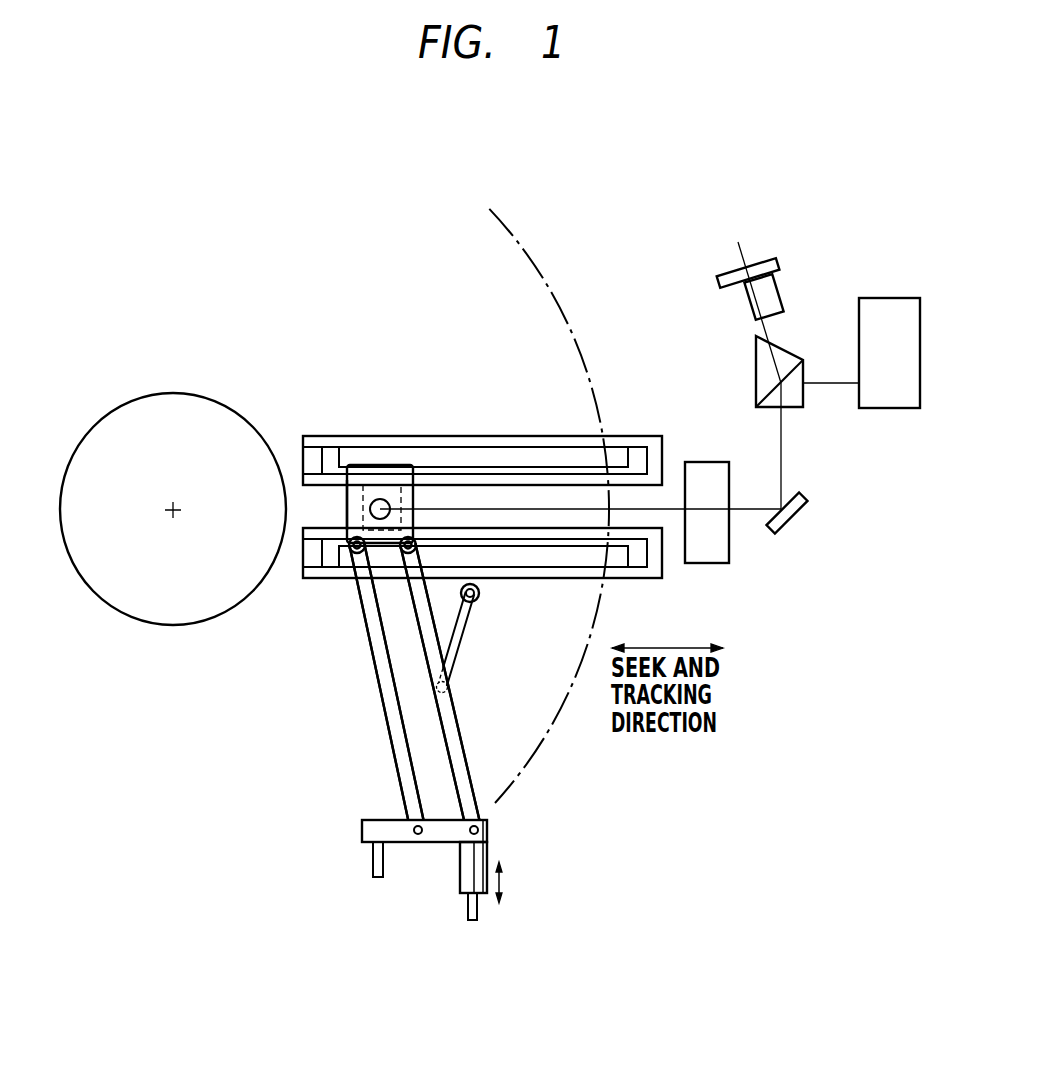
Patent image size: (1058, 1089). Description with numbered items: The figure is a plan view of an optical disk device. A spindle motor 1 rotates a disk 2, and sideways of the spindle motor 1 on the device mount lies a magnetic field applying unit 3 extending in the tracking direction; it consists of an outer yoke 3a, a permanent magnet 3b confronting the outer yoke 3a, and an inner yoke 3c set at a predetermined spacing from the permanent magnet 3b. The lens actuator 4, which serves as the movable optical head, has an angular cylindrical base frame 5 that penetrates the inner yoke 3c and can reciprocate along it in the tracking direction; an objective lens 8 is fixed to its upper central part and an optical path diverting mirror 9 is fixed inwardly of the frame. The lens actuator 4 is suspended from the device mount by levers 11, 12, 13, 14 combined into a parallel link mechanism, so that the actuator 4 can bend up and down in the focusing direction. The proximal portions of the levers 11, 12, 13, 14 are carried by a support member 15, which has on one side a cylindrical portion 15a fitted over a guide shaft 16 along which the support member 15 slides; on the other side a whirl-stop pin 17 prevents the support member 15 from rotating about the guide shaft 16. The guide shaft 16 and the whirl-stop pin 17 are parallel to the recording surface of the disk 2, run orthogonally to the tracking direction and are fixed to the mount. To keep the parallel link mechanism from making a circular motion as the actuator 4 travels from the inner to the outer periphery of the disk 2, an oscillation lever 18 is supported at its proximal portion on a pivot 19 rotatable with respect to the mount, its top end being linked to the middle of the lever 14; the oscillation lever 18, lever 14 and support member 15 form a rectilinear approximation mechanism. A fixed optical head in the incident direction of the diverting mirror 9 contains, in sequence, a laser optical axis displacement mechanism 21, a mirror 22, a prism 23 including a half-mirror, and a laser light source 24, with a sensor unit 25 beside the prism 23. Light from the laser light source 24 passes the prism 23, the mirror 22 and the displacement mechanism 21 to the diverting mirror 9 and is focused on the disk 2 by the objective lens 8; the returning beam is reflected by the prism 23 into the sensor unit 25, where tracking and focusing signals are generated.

The spindle motor 1 is at (182, 408).
The disk 2 is at (506, 222).
The magnetic field applying unit 3 is at (508, 502).
The outer yoke 3a is at (623, 443).
The permanent magnet 3b is at (566, 455).
The inner yoke 3c is at (652, 482).
The lens actuator 4 is at (357, 473).
The base frame 5 is at (355, 512).
The objective lens 8 is at (380, 507).
The optical path diverting mirror 9 is at (390, 485).
The lever 11 is at (398, 742).
The lever 12 is at (387, 681).
The lever 13 is at (463, 765).
The lever 14 is at (440, 681).
The support member 15 is at (375, 820).
The cylindrical portion 15a is at (488, 855).
The guide shaft 16 is at (468, 907).
The whirl-stop pin 17 is at (375, 863).
The oscillation lever 18 is at (458, 635).
The pivot 19 is at (478, 598).
The laser optical axis displacement mechanism 21 is at (713, 554).
The mirror 22 is at (790, 512).
The prism 23 is at (767, 383).
The laser light source 24 is at (765, 262).
The sensor unit 25 is at (893, 305).